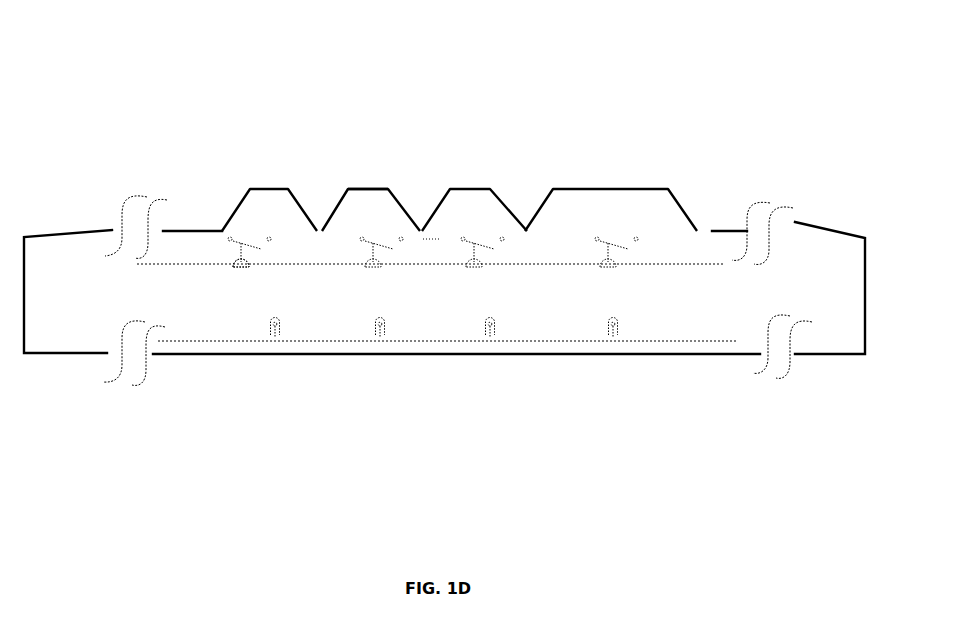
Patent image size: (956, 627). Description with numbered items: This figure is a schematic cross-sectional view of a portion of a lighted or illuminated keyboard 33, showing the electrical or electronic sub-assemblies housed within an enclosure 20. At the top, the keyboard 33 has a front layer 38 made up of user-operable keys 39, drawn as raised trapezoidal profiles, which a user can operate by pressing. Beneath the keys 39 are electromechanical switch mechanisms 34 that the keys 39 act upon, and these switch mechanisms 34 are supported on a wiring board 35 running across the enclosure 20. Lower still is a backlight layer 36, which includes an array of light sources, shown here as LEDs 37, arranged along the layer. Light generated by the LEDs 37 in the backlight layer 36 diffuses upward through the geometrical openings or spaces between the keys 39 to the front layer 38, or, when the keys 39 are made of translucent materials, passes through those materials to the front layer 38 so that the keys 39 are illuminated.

The keyboard 33 is at (190, 33).
The enclosure 20 is at (712, 230).
The front layer 38 is at (250, 170).
The user-operable keys 39 is at (383, 188).
The electromechanical switch mechanisms 34 is at (595, 237).
The wiring board 35 is at (243, 267).
The backlight layer 36 is at (327, 345).
The LEDs 37 is at (488, 317).